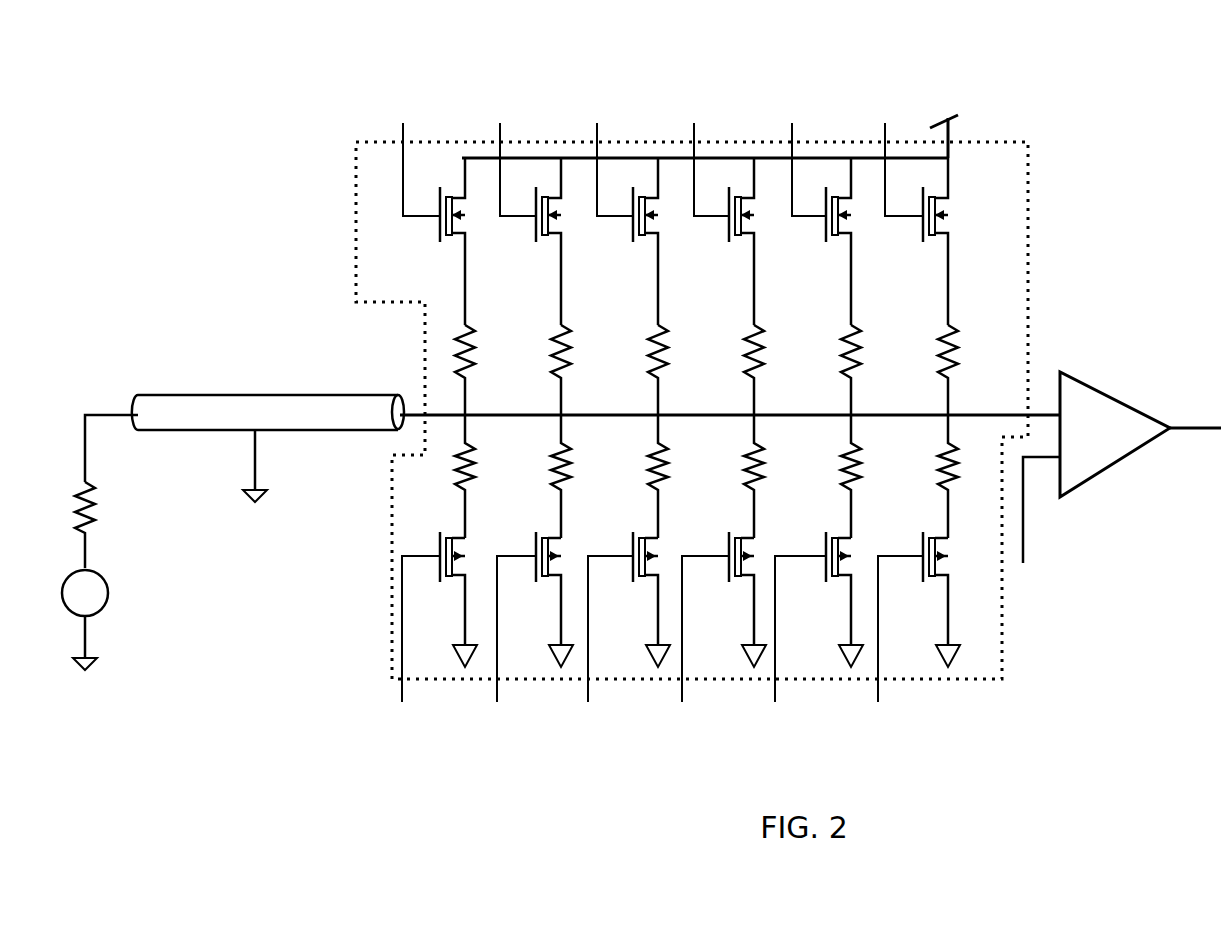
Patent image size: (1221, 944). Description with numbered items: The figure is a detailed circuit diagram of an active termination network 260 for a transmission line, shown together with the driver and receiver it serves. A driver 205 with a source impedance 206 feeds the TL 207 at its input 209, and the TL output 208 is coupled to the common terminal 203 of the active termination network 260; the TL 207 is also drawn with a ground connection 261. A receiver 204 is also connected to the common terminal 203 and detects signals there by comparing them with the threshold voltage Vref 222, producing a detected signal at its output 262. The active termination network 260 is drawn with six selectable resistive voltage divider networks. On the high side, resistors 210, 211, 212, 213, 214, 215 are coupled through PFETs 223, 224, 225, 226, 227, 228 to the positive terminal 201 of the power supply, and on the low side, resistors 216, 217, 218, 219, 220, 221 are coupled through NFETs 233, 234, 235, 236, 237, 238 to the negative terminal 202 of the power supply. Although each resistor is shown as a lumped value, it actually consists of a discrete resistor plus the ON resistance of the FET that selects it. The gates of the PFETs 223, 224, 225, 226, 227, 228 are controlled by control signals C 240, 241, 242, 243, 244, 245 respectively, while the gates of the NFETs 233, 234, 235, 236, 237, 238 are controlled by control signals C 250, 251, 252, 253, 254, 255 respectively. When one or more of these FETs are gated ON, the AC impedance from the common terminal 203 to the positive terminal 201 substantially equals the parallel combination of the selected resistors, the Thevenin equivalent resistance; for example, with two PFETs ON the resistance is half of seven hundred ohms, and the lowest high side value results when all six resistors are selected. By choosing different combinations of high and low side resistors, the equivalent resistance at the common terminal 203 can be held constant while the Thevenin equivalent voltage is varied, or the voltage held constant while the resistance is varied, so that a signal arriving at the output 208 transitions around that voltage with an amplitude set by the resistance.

The positive terminal 201 is at (957, 122).
The negative terminal 202 is at (950, 658).
The common terminal 203 is at (1035, 413).
The receiver 204 is at (1107, 390).
The driver 205 is at (100, 595).
The source impedance 206 is at (98, 497).
The TL 207 is at (223, 395).
The output 208 is at (414, 412).
The input 209 is at (107, 410).
The high side resistor 210 is at (473, 347).
The high side resistor 211 is at (569, 347).
The high side resistor 212 is at (666, 347).
The high side resistor 213 is at (762, 347).
The high side resistor 214 is at (859, 347).
The high side resistor 215 is at (958, 353).
The low side resistor 216 is at (473, 470).
The low side resistor 217 is at (569, 470).
The low side resistor 218 is at (666, 470).
The low side resistor 219 is at (762, 470).
The low side resistor 220 is at (859, 475).
The low side resistor 221 is at (958, 482).
The threshold voltage Vref 222 is at (1027, 527).
The PFET 223 is at (468, 228).
The PFET 224 is at (565, 228).
The PFET 225 is at (661, 228).
The PFET 226 is at (756, 224).
The PFET 227 is at (851, 224).
The PFET 228 is at (948, 224).
The NFET 233 is at (445, 583).
The NFET 234 is at (541, 583).
The NFET 235 is at (638, 583).
The NFET 236 is at (733, 586).
The NFET 237 is at (830, 586).
The NFET 238 is at (930, 586).
The control signal C 240 is at (403, 123).
The control signal C 241 is at (502, 122).
The control signal C 242 is at (598, 122).
The control signal C 243 is at (697, 133).
The control signal C 244 is at (794, 131).
The control signal C 245 is at (886, 124).
The control signal C 250 is at (402, 702).
The control signal C 251 is at (497, 702).
The control signal C 252 is at (588, 702).
The control signal C 253 is at (682, 702).
The control signal C 254 is at (775, 702).
The control signal C 255 is at (878, 702).
The active termination network 260 is at (1028, 192).
The transmission line ground 261 is at (258, 497).
The output 262 is at (1187, 432).